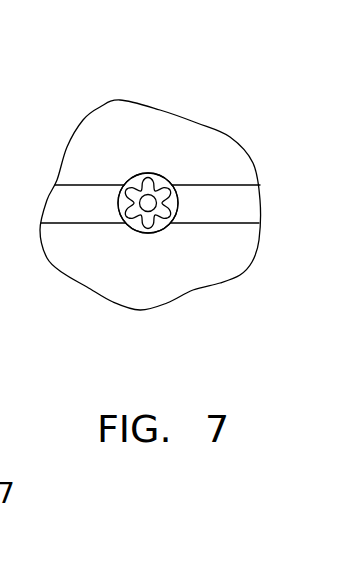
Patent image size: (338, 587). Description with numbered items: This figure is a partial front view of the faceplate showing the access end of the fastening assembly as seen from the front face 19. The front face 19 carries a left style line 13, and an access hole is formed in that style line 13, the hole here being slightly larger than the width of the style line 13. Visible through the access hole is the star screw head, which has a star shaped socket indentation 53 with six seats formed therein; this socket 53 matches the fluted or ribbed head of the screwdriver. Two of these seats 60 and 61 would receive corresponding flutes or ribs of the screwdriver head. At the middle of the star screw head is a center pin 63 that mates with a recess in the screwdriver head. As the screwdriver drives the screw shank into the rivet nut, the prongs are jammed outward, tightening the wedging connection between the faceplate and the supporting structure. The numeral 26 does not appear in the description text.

The front face 19 is at (165, 135).
The left style line 13 is at (226, 183).
The seat 60 is at (127, 187).
The seat 61 is at (130, 231).
The center pin 63 is at (147, 201).
The hexalobular drive recess 26 is at (160, 220).
The star shaped socket indentation 53 is at (178, 208).